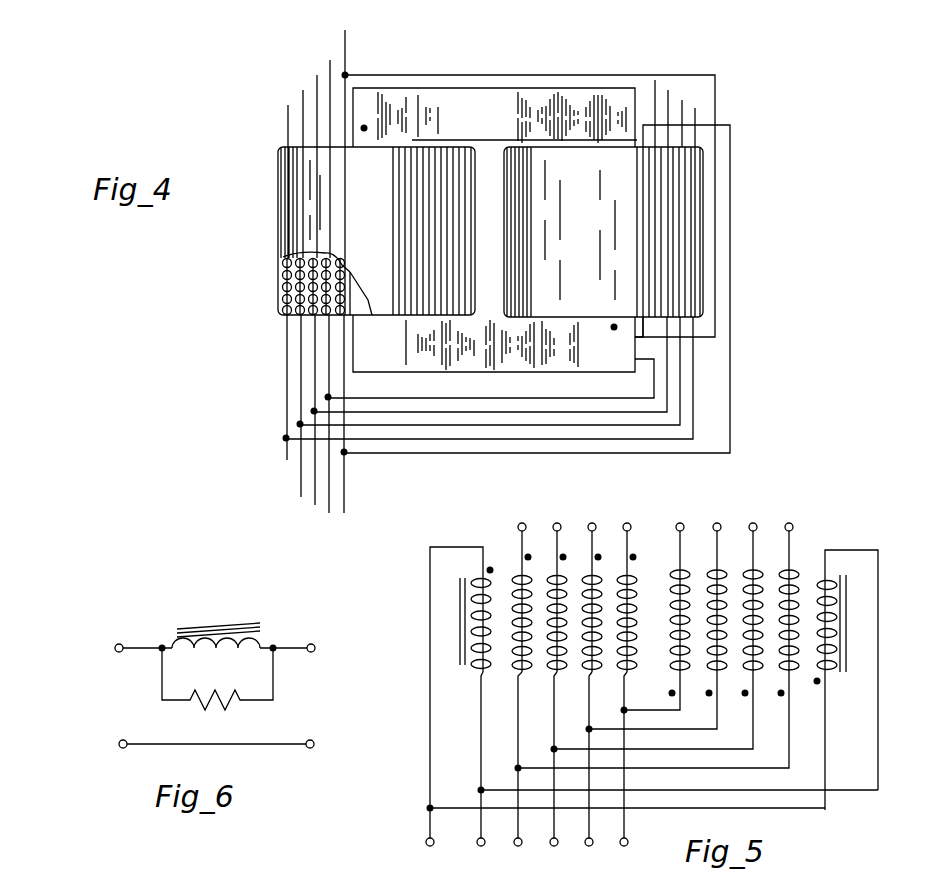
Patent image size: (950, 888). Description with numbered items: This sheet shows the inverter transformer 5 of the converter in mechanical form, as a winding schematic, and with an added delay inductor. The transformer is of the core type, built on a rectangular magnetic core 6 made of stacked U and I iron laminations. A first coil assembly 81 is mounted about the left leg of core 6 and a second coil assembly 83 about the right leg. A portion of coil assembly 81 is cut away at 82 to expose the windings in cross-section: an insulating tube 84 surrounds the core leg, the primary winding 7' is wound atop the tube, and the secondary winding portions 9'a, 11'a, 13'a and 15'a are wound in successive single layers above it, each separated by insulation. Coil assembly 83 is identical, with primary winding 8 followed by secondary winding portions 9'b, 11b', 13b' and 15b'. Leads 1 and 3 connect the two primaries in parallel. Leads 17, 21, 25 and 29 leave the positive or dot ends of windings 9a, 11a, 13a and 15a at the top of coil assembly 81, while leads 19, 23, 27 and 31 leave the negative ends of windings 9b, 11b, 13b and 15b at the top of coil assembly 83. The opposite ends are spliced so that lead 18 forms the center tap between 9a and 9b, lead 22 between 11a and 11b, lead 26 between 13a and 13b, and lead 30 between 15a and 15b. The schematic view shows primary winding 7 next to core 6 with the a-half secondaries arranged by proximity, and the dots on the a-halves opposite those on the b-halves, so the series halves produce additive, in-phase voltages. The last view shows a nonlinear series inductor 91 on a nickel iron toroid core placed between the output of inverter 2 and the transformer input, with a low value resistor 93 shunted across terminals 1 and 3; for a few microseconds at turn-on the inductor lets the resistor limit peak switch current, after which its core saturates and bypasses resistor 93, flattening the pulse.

In FIG. 4, the lead 1 is at (345, 60).
In FIG. 5, the lead 1 is at (430, 846).
In FIG. 4, the lead 3 is at (344, 482).
In FIG. 5, the lead 3 is at (481, 846).
In FIG. 4, the magnetic core 6 is at (492, 122).
In FIG. 5, the magnetic core 6 is at (842, 576).
In FIG. 5, the primary winding 7 is at (488, 608).
In FIG. 4, the primary winding 7' is at (362, 282).
In FIG. 4, the primary winding 8 is at (635, 337).
In FIG. 5, the primary winding 8 is at (815, 680).
In FIG. 5, the secondary winding portion 9a is at (518, 668).
In FIG. 5, the secondary winding portion 9b is at (779, 683).
In FIG. 4, the secondary winding portion 9'a is at (296, 322).
In FIG. 4, the secondary winding portion 9'b is at (490, 371).
In FIG. 5, the secondary winding portion 11a is at (552, 676).
In FIG. 5, the secondary winding portion 11b is at (658, 658).
In FIG. 4, the secondary winding portion 11'a is at (282, 307).
In FIG. 4, the secondary winding portion 11b' is at (523, 366).
In FIG. 5, the secondary winding portion 13a is at (587, 676).
In FIG. 5, the secondary winding portion 13b is at (658, 648).
In FIG. 4, the secondary winding portion 13'a is at (283, 283).
In FIG. 4, the secondary winding portion 13b' is at (536, 372).
In FIG. 5, the secondary winding portion 15a is at (622, 676).
In FIG. 5, the secondary winding portion 15b is at (657, 638).
In FIG. 4, the secondary winding portion 15'a is at (283, 259).
In FIG. 4, the secondary winding portion 15b' is at (529, 379).
In FIG. 4, the lead 17 is at (330, 60).
In FIG. 5, the lead 17 is at (519, 524).
In FIG. 4, the lead 18 is at (329, 505).
In FIG. 5, the lead 18 is at (518, 846).
In FIG. 4, the lead 19 is at (655, 80).
In FIG. 5, the lead 19 is at (786, 524).
In FIG. 4, the lead 21 is at (317, 75).
In FIG. 5, the lead 21 is at (554, 524).
In FIG. 4, the lead 22 is at (315, 498).
In FIG. 5, the lead 22 is at (554, 846).
In FIG. 4, the lead 23 is at (668, 90).
In FIG. 5, the lead 23 is at (750, 524).
In FIG. 4, the lead 25 is at (303, 90).
In FIG. 5, the lead 25 is at (589, 524).
In FIG. 4, the lead 26 is at (301, 478).
In FIG. 5, the lead 26 is at (589, 846).
In FIG. 4, the lead 27 is at (682, 100).
In FIG. 5, the lead 27 is at (714, 524).
In FIG. 4, the lead 29 is at (288, 105).
In FIG. 5, the lead 29 is at (624, 524).
In FIG. 4, the lead 30 is at (287, 460).
In FIG. 5, the lead 30 is at (624, 846).
In FIG. 4, the lead 31 is at (695, 108).
In FIG. 5, the lead 31 is at (677, 524).
In FIG. 4, the first coil assembly 81 is at (358, 195).
In FIG. 4, the cutaway 82 is at (326, 258).
In FIG. 4, the second coil assembly 83 is at (587, 195).
In FIG. 4, the insulating tube 84 is at (350, 315).
In FIG. 6, the nonlinear series inductor 91 is at (268, 626).
In FIG. 6, the resistor 93 is at (170, 645).
In FIG. 6, the inverter 2 is at (69, 704).
In FIG. 6, the inverter transformer 5 is at (370, 697).